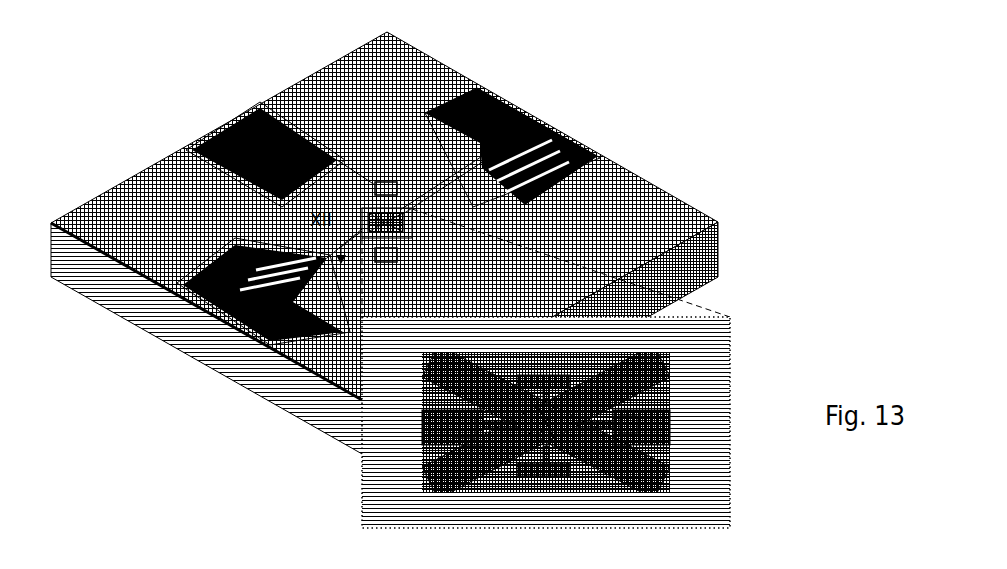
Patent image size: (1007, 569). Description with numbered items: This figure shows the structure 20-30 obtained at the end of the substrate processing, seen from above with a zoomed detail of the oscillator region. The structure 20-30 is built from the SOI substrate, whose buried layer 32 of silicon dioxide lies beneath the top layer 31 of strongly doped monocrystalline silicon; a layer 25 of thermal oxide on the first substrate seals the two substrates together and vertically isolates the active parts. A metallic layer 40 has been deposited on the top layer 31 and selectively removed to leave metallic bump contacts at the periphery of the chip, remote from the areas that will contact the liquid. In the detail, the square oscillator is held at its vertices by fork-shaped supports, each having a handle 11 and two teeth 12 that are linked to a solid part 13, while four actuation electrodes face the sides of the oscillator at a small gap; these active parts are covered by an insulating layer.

The handle 11 is at (633, 440).
The teeth 12 is at (633, 407).
The solid part 13 is at (657, 412).
The structure 20-30 is at (656, 114).
The layer of SiO2 25 is at (570, 140).
The top layer 31 is at (427, 174).
The buried layer 32 is at (360, 103).
The metallic layer 40 is at (247, 116).